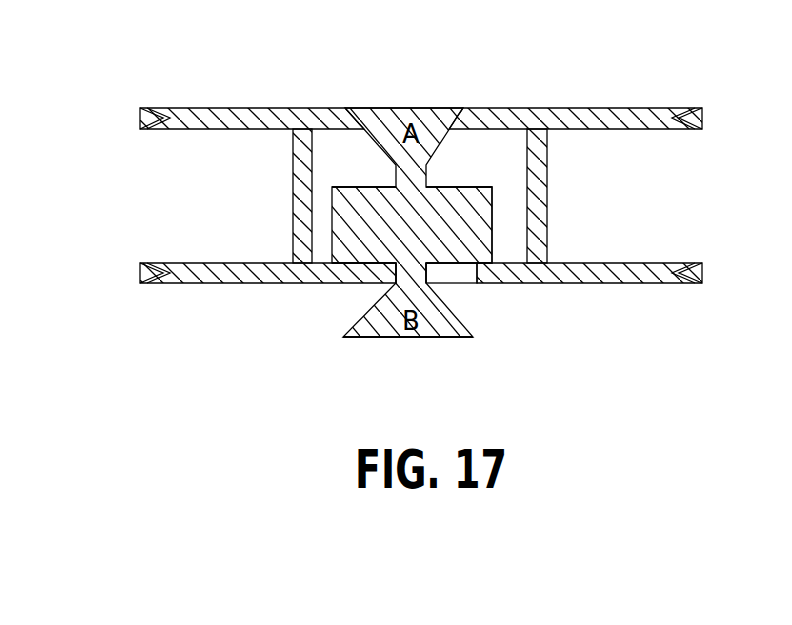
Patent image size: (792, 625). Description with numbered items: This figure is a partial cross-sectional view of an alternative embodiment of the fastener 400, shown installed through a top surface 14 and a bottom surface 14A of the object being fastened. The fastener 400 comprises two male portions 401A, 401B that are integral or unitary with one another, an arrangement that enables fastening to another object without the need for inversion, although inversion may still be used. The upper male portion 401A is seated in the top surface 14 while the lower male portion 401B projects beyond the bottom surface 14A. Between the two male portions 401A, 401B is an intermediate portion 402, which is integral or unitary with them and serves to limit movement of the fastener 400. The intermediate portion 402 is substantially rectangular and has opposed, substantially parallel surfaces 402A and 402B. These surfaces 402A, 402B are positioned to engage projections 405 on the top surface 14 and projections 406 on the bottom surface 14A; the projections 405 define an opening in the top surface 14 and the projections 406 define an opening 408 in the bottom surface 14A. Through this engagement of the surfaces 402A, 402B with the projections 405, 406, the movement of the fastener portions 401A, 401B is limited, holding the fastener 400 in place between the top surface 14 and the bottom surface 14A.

The top surface 14 is at (615, 108).
The bottom surface 14A is at (638, 285).
The fastener 400 is at (452, 104).
The male portion 401A is at (365, 104).
The male portion 401B is at (410, 344).
The intermediate portion 402 is at (377, 268).
The surface of intermediate portion 402A is at (337, 187).
The surface of intermediate portion 402B is at (363, 282).
The projection 405 is at (343, 129).
The projection 406 is at (347, 280).
The opening 408 is at (455, 292).